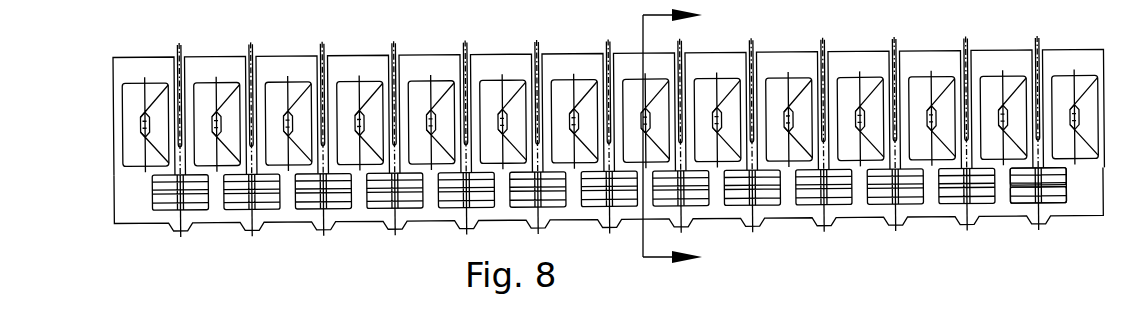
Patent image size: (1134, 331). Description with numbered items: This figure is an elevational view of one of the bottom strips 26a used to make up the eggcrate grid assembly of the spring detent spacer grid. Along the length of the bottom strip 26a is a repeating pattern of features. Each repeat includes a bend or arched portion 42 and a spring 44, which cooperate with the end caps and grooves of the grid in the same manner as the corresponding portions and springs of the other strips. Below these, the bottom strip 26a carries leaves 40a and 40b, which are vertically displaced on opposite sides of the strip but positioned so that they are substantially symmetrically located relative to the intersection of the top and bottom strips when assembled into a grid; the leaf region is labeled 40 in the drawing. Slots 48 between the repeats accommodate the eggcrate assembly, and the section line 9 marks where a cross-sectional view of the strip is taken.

The bottom strip 26a is at (288, 24).
The contact member 40 is at (1038, 212).
The leaf 40a is at (1062, 175).
The leaf 40b is at (1018, 194).
The bend or arched portion 42 is at (925, 50).
The spring 44 is at (1087, 108).
The slot 48 is at (398, 60).
The section line 9- 9 is at (685, 142).